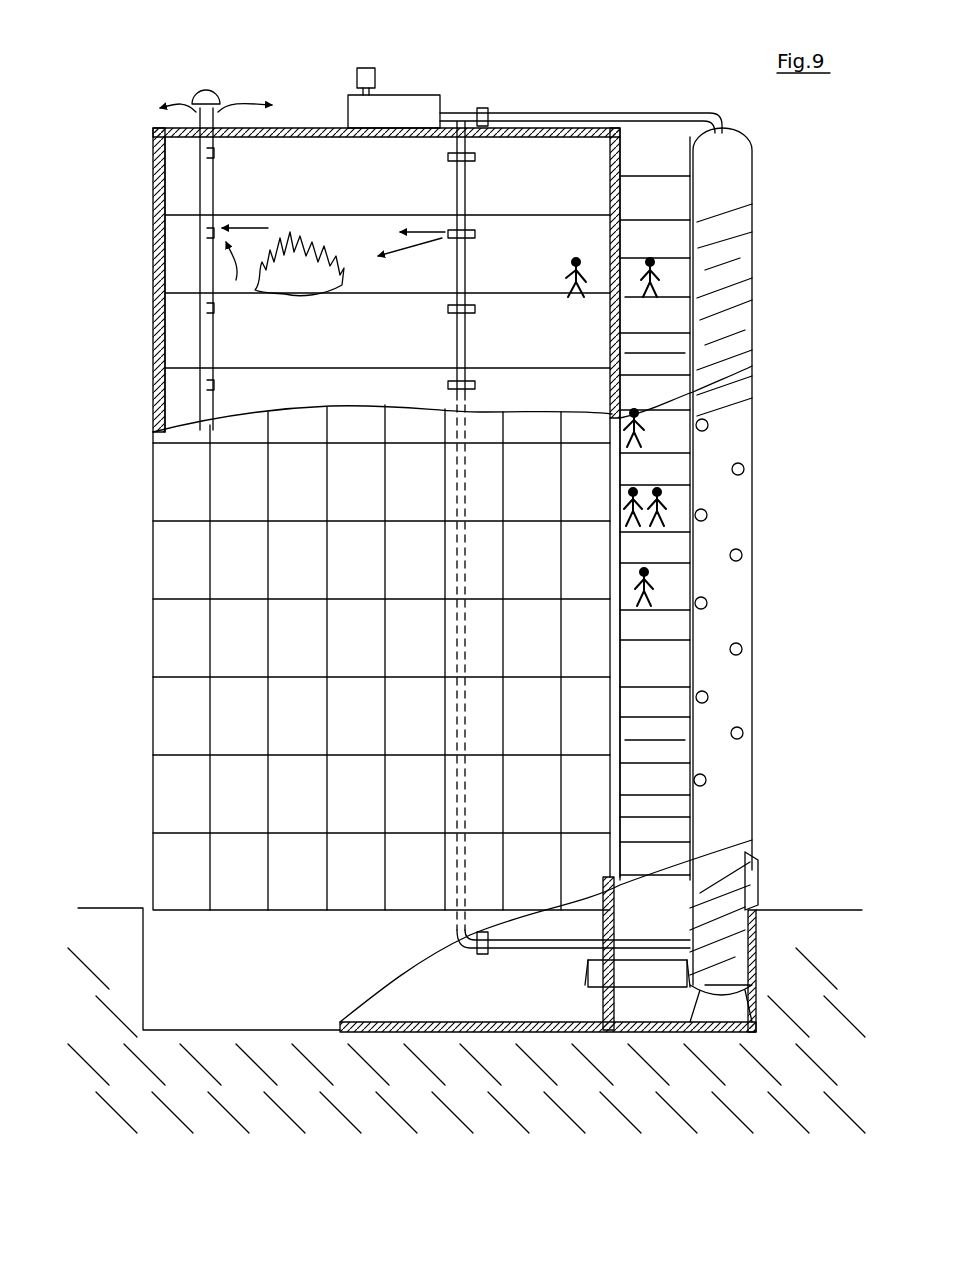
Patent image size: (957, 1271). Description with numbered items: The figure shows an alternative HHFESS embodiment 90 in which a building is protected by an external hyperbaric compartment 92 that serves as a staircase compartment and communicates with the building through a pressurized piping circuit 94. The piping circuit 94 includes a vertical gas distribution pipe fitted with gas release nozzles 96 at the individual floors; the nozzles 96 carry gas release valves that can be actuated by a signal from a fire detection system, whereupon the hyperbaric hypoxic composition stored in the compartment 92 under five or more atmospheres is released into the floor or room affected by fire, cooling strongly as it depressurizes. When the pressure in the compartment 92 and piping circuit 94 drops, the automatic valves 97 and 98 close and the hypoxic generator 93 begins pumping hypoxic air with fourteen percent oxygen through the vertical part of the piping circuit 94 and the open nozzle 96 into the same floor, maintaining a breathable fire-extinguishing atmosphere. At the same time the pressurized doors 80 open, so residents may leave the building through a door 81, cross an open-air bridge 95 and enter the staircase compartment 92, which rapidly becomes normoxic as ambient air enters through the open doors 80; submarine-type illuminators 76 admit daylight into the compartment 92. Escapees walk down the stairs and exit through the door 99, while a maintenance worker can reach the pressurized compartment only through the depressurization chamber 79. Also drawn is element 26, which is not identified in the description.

The HHFESS embodiment 90 is at (168, 78).
The vent riser pipe 26 is at (210, 165).
The hypoxic generator 93 is at (390, 110).
The automatic valve 97 is at (486, 110).
The pressurized piping circuit 94 is at (596, 120).
The door 81 is at (387, 284).
The external hyperbaric compartment 92 is at (721, 575).
The pressurized door 80 is at (700, 320).
The gas release nozzle 96 is at (450, 385).
The open-air bridge 95 is at (640, 368).
The submarine-type illuminator 76 is at (738, 552).
The door 99 is at (758, 892).
The automatic valve 98 is at (480, 958).
The depressurization chamber 79 is at (655, 978).